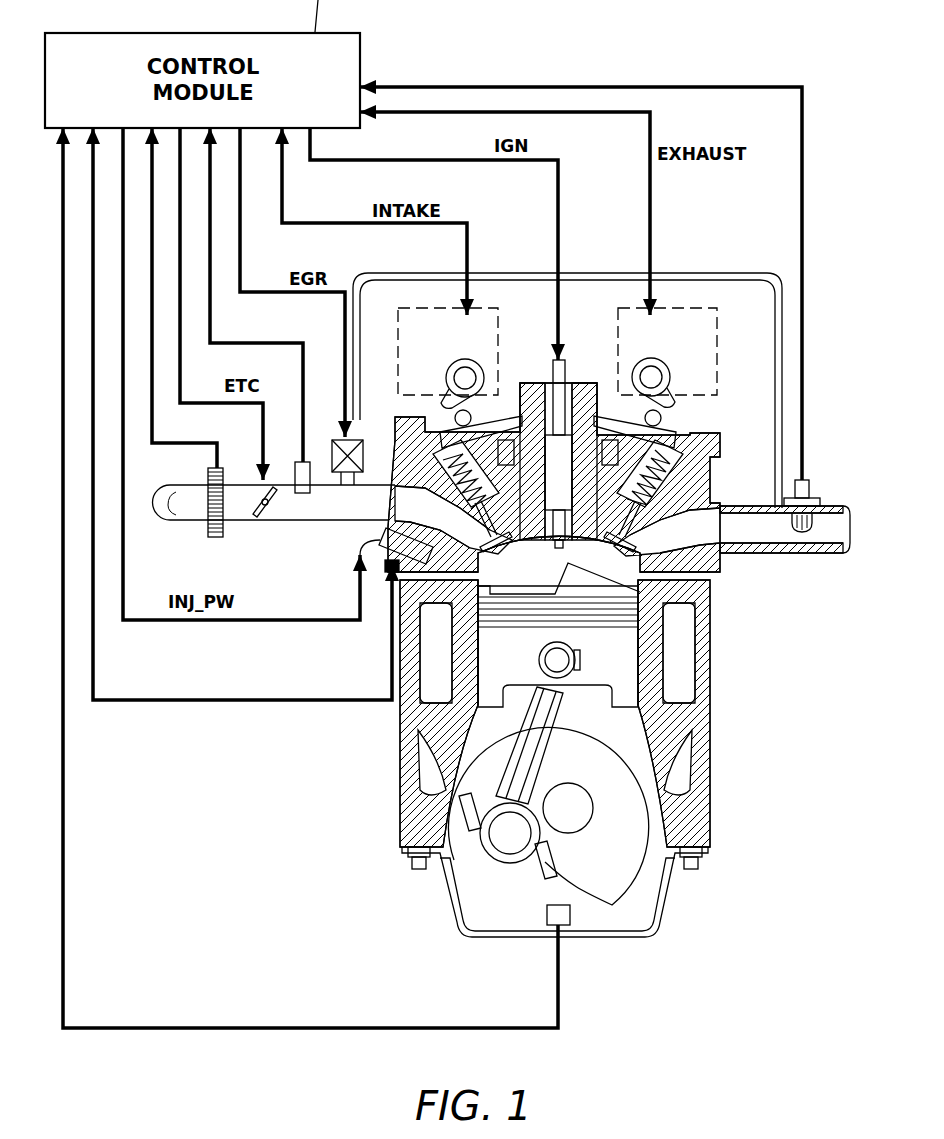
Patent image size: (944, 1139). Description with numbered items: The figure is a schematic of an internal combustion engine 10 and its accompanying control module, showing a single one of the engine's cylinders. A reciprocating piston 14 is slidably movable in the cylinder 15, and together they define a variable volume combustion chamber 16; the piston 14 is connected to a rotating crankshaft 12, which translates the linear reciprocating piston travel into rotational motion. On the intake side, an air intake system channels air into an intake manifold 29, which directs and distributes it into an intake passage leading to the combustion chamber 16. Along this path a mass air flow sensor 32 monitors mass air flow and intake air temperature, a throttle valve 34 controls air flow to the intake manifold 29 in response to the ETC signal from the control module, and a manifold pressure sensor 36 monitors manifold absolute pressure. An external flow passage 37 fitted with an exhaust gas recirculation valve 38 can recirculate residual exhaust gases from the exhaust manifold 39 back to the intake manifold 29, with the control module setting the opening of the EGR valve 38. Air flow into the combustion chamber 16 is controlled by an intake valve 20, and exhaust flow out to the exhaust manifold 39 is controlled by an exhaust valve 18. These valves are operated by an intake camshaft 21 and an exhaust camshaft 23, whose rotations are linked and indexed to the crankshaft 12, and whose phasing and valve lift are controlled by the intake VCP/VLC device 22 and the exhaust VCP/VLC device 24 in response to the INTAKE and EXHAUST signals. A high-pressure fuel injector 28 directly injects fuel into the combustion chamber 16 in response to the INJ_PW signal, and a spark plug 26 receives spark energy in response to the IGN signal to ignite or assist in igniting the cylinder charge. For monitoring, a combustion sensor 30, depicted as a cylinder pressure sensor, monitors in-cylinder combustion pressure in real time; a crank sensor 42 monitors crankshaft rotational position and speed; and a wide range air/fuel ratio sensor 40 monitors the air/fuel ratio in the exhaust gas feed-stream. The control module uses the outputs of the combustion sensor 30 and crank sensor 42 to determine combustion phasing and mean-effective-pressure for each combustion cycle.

The internal combustion engine 10 is at (700, 712).
The crankshaft 12 is at (613, 868).
The piston 14 is at (615, 671).
The cylinder 15 is at (648, 590).
The combustion chamber 16 is at (532, 585).
The exhaust valve 18 is at (640, 540).
The intake valve 20 is at (470, 535).
The intake camshaft 21 is at (468, 378).
The intake variable cam phasing/variable lift control device 22 is at (470, 320).
The exhaust camshaft 23 is at (650, 377).
The exhaust variable cam phasing/variable lift control device 24 is at (700, 370).
The spark plug 26 is at (565, 360).
The fuel injector 28 is at (360, 575).
The intake manifold 29 is at (378, 488).
The combustion sensor 30 is at (386, 600).
The mass air flow sensor 32 is at (215, 540).
The throttle valve 34 is at (258, 520).
The manifold pressure sensor 36 is at (302, 494).
The external flow passage 37 is at (700, 273).
The exhaust gas recirculation valve 38 is at (343, 487).
The exhaust manifold 39 is at (752, 506).
The wide range air/fuel ratio sensor 40 is at (806, 482).
The crank sensor 42 is at (550, 918).